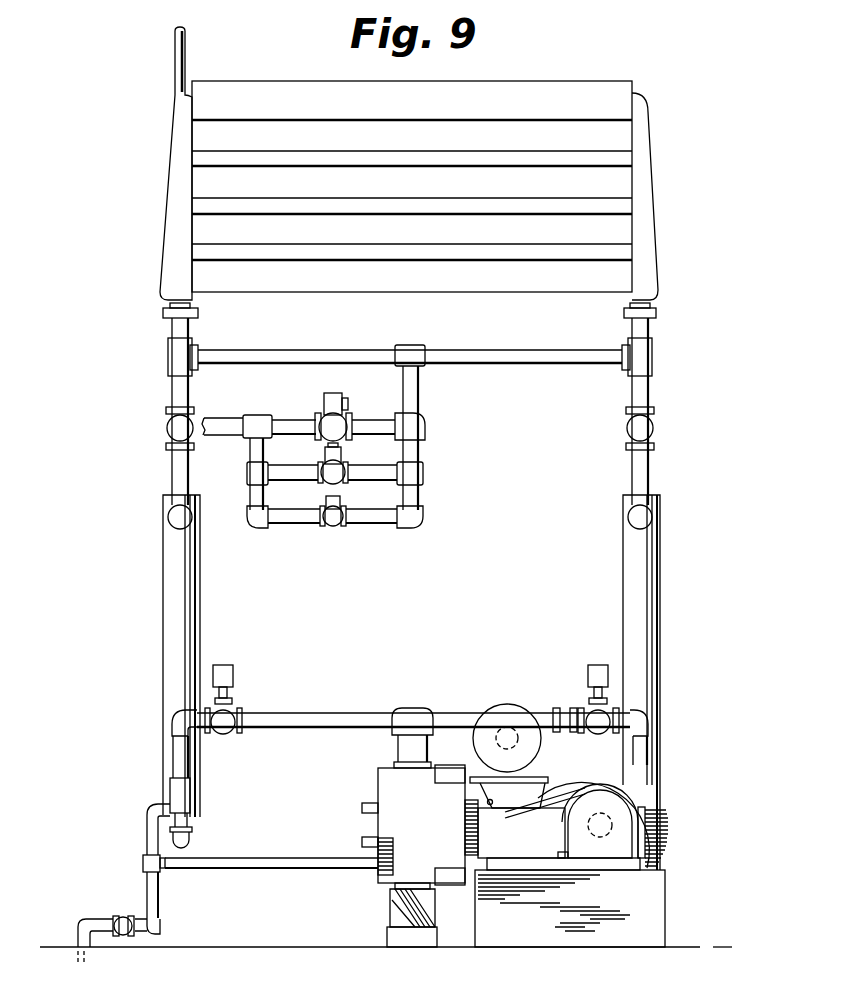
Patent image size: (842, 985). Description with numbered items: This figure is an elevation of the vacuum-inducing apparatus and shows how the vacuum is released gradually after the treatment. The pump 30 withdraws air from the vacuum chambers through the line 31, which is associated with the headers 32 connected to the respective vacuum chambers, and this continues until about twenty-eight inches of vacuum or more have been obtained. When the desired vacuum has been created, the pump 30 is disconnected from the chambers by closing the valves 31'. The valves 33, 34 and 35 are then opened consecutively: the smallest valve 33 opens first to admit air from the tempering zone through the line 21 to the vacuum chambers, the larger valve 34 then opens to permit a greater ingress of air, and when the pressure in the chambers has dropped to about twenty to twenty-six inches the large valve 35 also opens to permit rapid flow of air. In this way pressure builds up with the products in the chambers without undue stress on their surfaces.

The line 21 is at (218, 426).
The pump 30 is at (430, 823).
The line 31 is at (407, 411).
The valves 31' is at (412, 695).
The headers 32 is at (175, 213).
The smallest valve 33 is at (336, 527).
The larger valve 34 is at (342, 481).
The large valve 35 is at (342, 433).